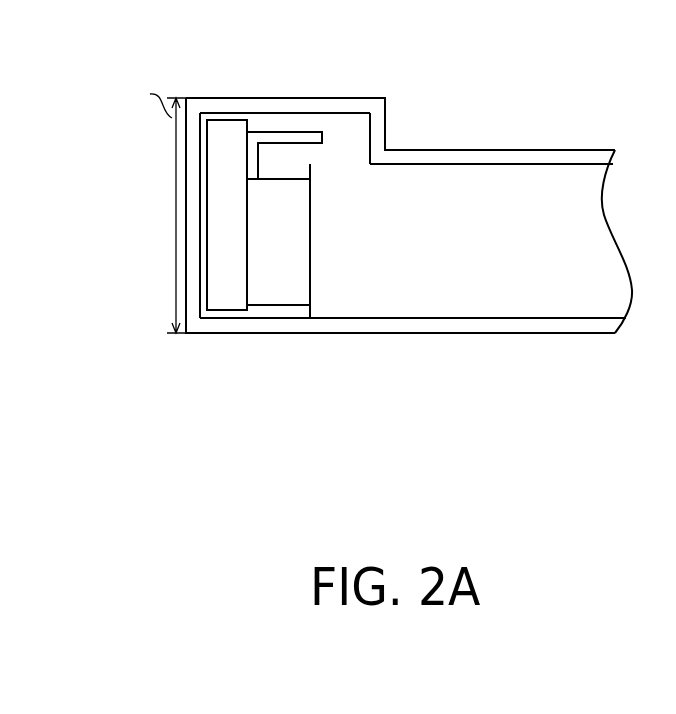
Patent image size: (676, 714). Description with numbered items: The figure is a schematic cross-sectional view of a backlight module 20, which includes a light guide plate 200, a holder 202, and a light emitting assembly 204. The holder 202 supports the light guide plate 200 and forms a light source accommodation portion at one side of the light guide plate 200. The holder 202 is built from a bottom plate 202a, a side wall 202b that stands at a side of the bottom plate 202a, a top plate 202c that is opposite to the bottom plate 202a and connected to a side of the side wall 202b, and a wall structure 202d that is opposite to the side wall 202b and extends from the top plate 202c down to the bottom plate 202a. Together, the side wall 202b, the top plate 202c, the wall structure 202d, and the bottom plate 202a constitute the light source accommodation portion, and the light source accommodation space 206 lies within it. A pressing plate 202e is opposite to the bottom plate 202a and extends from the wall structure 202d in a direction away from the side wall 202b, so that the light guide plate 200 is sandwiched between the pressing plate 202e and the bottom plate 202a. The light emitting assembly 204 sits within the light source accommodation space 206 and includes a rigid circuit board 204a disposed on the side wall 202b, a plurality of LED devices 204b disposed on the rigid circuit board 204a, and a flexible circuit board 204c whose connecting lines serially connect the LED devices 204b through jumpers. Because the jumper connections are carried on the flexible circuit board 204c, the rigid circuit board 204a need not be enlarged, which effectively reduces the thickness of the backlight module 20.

The backlight module 20 is at (342, 221).
The light guide plate 200 is at (391, 283).
The holder 202 is at (353, 221).
The bottom plate 202a is at (413, 365).
The side wall 202b is at (137, 215).
The top plate 202c is at (285, 59).
The wall structure 202d is at (436, 133).
The pressing plate 202e is at (501, 202).
The light emitting assembly 204 is at (184, 212).
The rigid circuit board 204a is at (179, 215).
The LED devices 204b is at (211, 272).
The flexible circuit board 204c is at (217, 146).
The light source accommodation space 206 is at (347, 109).